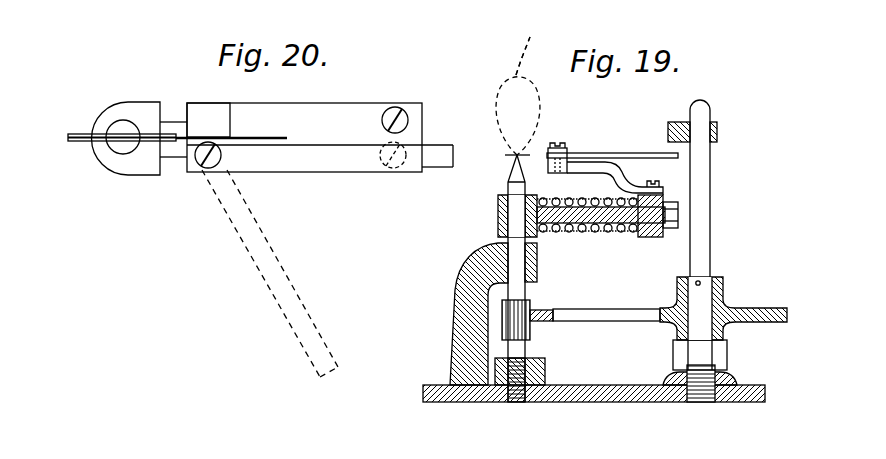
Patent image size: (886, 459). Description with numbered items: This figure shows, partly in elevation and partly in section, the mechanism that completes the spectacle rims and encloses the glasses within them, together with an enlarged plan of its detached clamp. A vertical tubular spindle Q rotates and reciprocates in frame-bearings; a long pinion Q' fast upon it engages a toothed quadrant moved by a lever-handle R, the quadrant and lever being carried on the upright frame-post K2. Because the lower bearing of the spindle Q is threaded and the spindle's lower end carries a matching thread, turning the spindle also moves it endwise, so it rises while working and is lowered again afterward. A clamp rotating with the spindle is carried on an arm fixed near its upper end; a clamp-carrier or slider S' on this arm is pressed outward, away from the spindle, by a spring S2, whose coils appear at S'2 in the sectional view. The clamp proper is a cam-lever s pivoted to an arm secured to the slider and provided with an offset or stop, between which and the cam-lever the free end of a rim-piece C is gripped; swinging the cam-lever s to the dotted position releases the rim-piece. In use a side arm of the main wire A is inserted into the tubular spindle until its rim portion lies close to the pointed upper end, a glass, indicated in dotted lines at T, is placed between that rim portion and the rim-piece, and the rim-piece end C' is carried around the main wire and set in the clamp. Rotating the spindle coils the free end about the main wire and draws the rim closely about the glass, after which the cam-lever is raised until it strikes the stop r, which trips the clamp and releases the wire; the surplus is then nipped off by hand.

In FIG. 20, the rim-piece C is at (177, 130).
In FIG. 19, the rim-piece C is at (534, 70).
In FIG. 20, the clamp-carrier or slider S' is at (304, 137).
In FIG. 19, the clamp-carrier or slider S' is at (615, 203).
In FIG. 20, the spring S2 is at (208, 120).
In FIG. 19, the spring S2 is at (557, 147).
In FIG. 20, the cam-lever s is at (320, 259).
In FIG. 19, the thread loop T is at (518, 96).
In FIG. 19, the main wire A is at (502, 142).
In FIG. 19, the vertical tubular spindle Q is at (517, 278).
In FIG. 19, the guide bar C' is at (603, 165).
In FIG. 19, the spring rod S'2 is at (601, 229).
In FIG. 19, the long pinion Q' is at (527, 316).
In FIG. 19, the lever-handle R is at (670, 308).
In FIG. 19, the post K2 is at (711, 188).
In FIG. 19, the stop r is at (668, 130).